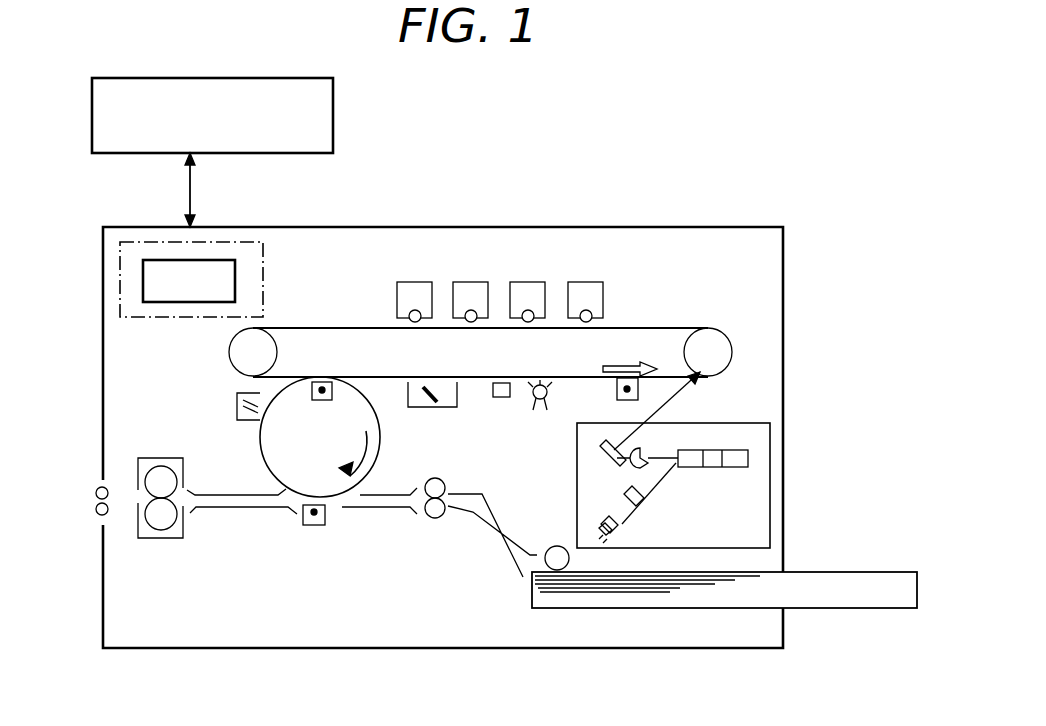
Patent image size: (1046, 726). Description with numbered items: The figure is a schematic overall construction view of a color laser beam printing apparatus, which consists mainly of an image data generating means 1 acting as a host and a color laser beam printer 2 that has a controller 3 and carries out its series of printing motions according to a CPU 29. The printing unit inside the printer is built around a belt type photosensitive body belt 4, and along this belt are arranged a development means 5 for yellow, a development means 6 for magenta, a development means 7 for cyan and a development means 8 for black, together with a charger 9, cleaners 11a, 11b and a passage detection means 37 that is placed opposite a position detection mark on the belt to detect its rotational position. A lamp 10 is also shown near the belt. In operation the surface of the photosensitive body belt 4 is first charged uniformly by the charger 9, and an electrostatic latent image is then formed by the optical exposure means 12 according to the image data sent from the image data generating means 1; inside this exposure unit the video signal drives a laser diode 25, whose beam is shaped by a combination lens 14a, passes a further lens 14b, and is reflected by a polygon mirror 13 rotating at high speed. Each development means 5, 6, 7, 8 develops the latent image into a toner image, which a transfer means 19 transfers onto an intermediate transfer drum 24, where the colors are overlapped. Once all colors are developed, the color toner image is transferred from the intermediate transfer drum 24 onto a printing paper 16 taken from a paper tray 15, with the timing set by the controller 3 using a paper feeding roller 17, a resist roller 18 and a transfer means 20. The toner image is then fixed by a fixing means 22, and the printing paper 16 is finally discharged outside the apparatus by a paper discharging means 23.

The image data generating means 1 is at (334, 132).
The color laser beam printer 2 is at (742, 226).
The controller 3 is at (264, 260).
The CPU 29 is at (236, 282).
The photosensitive body belt 4 is at (358, 327).
The development means (Y) 5 is at (586, 282).
The development means (M) 6 is at (529, 282).
The development means (C) 7 is at (470, 282).
The development means (K) 8 is at (412, 282).
The charger 9 is at (617, 394).
The lamp 10 is at (540, 410).
The cleaner 11a is at (436, 407).
The cleaner 11b is at (237, 406).
The optical exposure means 12 is at (752, 424).
The polygon mirror 13 is at (728, 467).
The combination lens 14a is at (648, 502).
The lens 14b is at (648, 445).
The paper tray 15 is at (868, 612).
The printing paper 16 is at (603, 592).
The paper feeding roller 17 is at (554, 548).
The resist roller 18 is at (435, 518).
The transfer means 19 is at (318, 400).
The transfer means 20 is at (313, 525).
The fixing means 22 is at (162, 538).
The paper discharging means 23 is at (96, 494).
The intermediate transfer drum 24 is at (376, 458).
The laser diode 25 is at (622, 532).
The passage detection means 37 is at (502, 397).